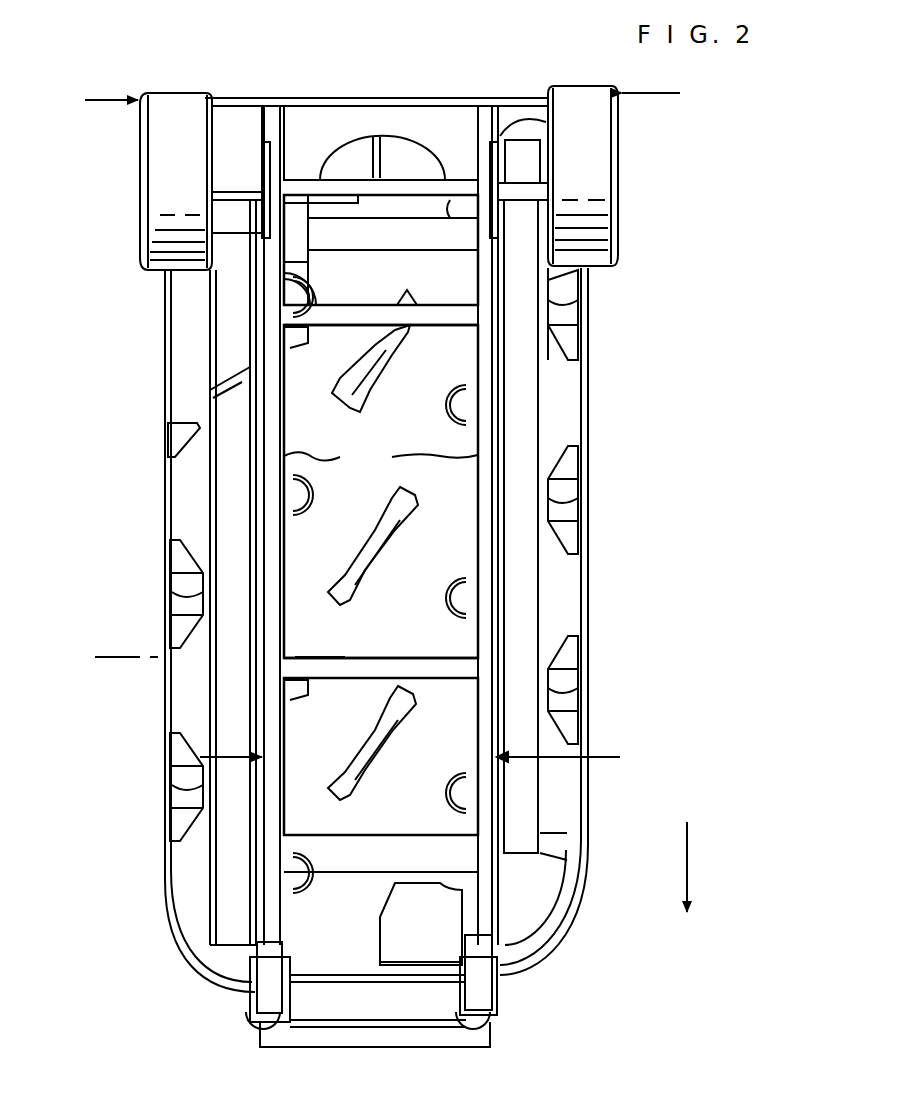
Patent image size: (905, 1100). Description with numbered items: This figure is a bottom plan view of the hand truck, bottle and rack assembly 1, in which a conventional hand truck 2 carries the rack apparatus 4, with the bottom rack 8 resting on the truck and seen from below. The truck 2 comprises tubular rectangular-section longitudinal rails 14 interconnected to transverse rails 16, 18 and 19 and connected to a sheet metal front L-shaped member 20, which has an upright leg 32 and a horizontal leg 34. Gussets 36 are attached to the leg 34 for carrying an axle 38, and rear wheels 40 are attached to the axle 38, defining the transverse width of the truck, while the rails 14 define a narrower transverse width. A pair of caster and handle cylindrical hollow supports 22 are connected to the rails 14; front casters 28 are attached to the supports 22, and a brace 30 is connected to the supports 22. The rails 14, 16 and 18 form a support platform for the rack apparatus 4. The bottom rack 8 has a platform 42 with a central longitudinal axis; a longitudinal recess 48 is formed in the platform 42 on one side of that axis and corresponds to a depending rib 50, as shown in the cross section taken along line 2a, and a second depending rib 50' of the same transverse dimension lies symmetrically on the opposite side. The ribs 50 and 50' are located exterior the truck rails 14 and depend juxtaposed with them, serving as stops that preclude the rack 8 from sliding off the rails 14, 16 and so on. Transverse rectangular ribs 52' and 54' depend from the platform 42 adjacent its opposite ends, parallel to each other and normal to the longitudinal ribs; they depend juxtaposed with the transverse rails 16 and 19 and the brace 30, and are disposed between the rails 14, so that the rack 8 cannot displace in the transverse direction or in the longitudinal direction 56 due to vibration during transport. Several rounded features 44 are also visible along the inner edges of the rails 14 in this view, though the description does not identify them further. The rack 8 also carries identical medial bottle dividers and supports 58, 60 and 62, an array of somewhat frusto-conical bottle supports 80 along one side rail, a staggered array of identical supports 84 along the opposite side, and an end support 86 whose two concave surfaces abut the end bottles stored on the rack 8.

The hand truck, bottle and rack assembly 1 is at (136, 526).
The hand truck 2 is at (134, 243).
The section line for FIG. 2a is at (117, 654).
The rack apparatus 4 is at (606, 450).
The bottom rack 8 is at (602, 632).
The longitudinal rails 14 is at (378, 525).
The transverse rail 16 is at (381, 348).
The transverse rail 18 is at (438, 672).
The transverse rail 19 is at (445, 1048).
The front L-shaped member 20 is at (392, 100).
The caster and handle cylindrical hollow supports 22 is at (248, 1000).
The front casters 28 is at (258, 1030).
The brace 30 is at (352, 1018).
The upright leg 32 is at (318, 98).
The horizontal leg 34 is at (412, 120).
The gussets 36 is at (278, 162).
The axle 38 is at (420, 178).
The rear wheels 40 is at (168, 160).
The platform 42 is at (422, 565).
The roller 44 is at (456, 412).
The longitudinal recess 48 is at (235, 860).
The depending rib 50 is at (187, 607).
The second depending rib 50' is at (577, 525).
The transverse rectangular rib 52' is at (381, 775).
The transverse rectangular rib 54' is at (381, 250).
The longitudinal direction 56 is at (690, 848).
The medial bottle divider and support 58 is at (376, 704).
The medial bottle divider and support 60 is at (398, 515).
The medial bottle divider and support 62 is at (362, 376).
The bottle supports 80 is at (562, 302).
The supports 84 is at (168, 575).
The end support 86 is at (458, 900).